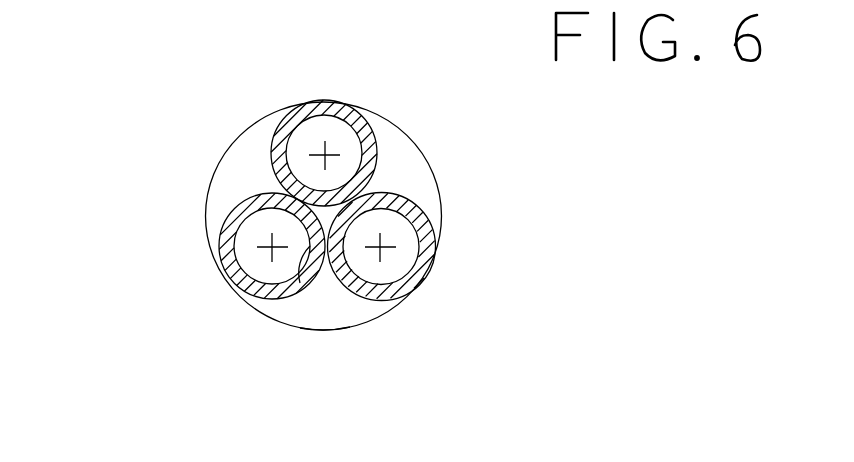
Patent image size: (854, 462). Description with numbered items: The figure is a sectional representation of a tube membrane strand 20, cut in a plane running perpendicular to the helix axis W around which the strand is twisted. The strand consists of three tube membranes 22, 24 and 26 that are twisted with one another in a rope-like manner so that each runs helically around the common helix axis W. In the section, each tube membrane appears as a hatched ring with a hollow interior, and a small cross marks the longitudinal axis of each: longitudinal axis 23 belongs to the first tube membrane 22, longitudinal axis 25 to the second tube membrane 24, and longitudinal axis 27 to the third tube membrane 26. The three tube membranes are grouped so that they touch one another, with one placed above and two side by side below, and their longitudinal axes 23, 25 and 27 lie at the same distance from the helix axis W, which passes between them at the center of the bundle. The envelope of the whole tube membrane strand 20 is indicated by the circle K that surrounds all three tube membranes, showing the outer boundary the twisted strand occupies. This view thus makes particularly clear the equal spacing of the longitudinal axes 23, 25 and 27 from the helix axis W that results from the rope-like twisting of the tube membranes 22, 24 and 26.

The tube membrane strand 20 is at (561, 169).
The tube membrane 22 is at (277, 135).
The longitudinal axis 23 is at (323, 148).
The tube membrane 24 is at (224, 228).
The longitudinal axis 25 is at (267, 250).
The tube membrane 26 is at (425, 231).
The longitudinal axis 27 is at (387, 258).
The helix axis W is at (303, 262).
The circle K is at (372, 318).